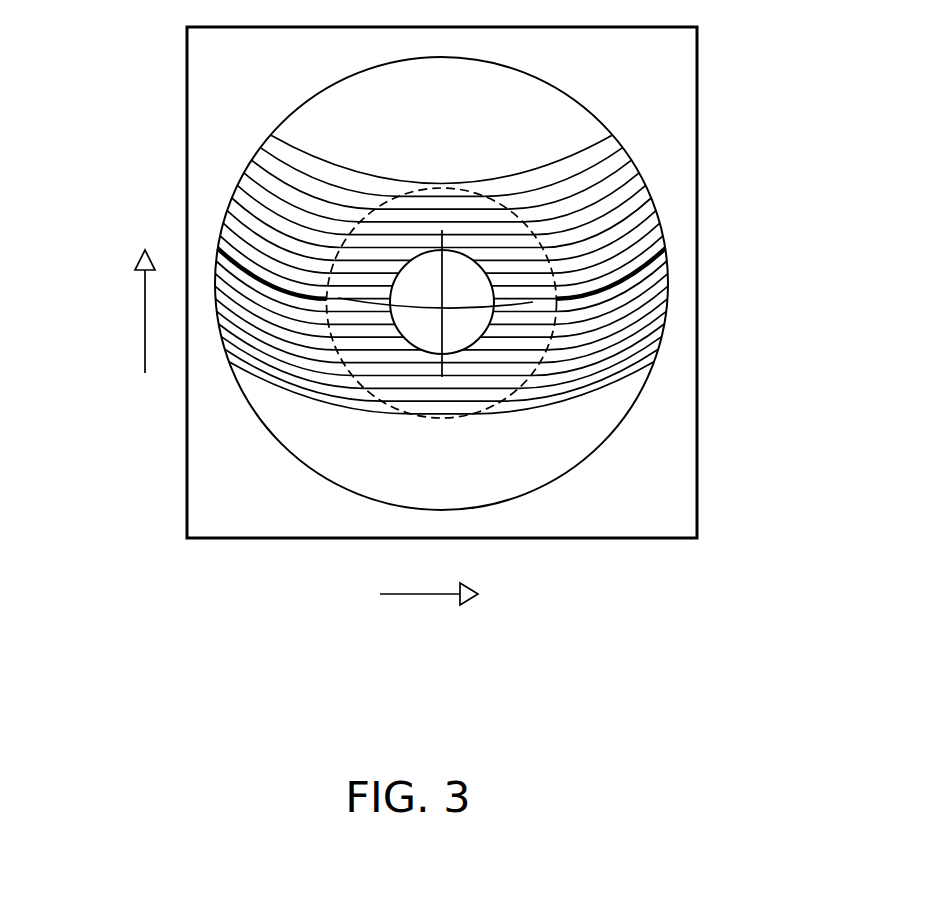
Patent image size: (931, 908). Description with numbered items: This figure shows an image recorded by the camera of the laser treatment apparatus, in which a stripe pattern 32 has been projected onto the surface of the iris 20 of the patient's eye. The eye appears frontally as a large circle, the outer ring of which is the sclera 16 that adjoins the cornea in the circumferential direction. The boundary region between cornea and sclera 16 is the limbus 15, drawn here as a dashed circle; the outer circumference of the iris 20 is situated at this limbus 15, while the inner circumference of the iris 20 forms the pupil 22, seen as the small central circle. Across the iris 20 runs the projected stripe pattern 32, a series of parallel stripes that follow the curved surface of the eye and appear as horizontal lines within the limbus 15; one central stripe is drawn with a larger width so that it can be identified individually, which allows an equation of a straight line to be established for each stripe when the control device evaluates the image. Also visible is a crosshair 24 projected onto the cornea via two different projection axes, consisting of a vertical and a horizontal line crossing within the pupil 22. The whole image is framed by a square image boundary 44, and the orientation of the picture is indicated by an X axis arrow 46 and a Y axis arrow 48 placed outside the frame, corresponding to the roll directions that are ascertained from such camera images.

The reference frame boundary 44 is at (698, 177).
The sclera 16 is at (605, 320).
The stripe pattern 32 is at (664, 252).
The iris 20 is at (513, 383).
The limbus 15 is at (545, 357).
The pupil 22 is at (480, 263).
The crosshair 24 is at (443, 333).
The Y axis 48 is at (145, 303).
The X axis 46 is at (433, 594).